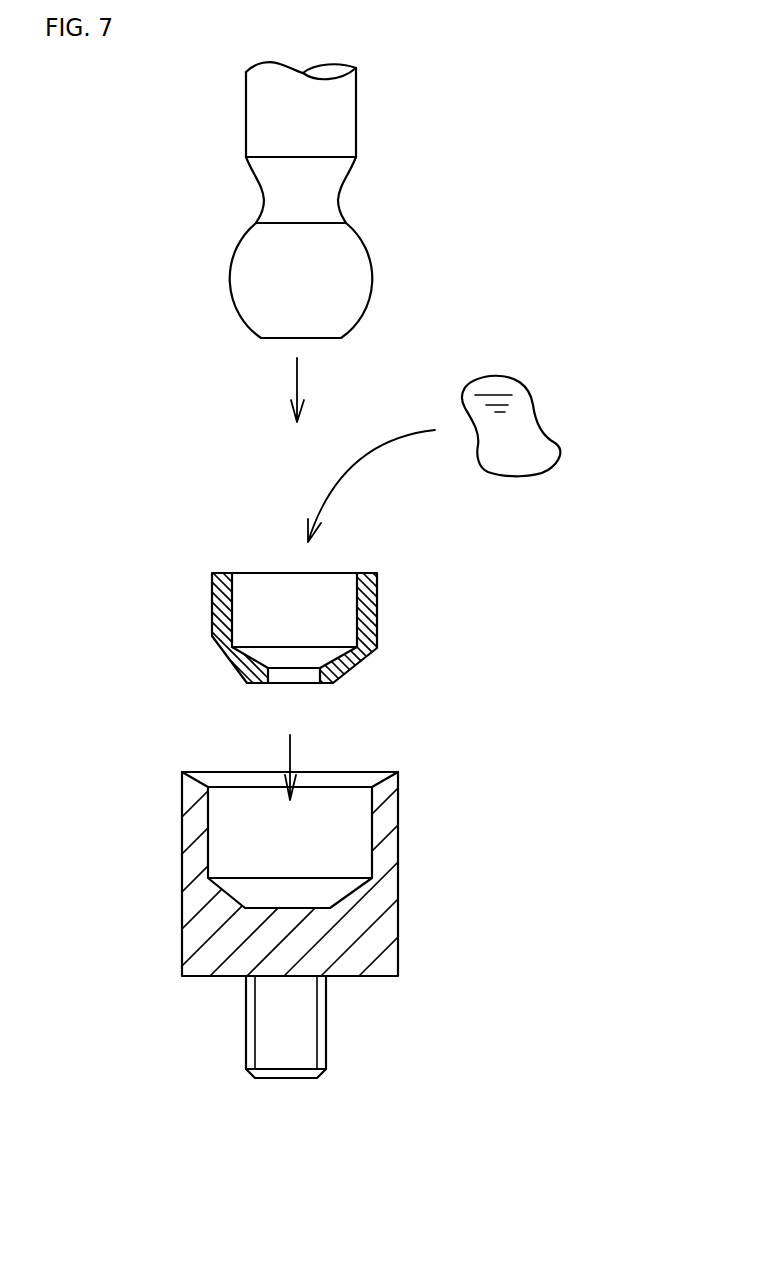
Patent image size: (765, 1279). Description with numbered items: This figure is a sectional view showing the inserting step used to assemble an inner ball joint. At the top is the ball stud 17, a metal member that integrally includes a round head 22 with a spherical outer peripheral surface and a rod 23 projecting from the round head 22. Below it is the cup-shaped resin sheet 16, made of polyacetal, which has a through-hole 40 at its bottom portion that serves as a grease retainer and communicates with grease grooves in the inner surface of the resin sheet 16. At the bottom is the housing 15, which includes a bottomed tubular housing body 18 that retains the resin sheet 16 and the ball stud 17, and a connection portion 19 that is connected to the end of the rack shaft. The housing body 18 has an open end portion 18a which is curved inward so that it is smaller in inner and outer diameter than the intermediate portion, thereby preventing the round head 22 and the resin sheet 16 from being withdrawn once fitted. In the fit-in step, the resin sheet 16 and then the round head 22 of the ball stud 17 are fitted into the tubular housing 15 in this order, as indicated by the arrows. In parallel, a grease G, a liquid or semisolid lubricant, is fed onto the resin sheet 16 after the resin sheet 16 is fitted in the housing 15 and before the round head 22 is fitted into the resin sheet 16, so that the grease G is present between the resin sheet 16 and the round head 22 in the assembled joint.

The rod 23 is at (342, 115).
The ball stud 17 is at (352, 213).
The round head 22 is at (352, 275).
The grease G is at (543, 457).
The resin sheet 16 is at (370, 610).
The through-hole 40 is at (270, 675).
The open end portion 18a is at (388, 790).
The housing body 18 is at (387, 890).
The housing 15 is at (397, 952).
The connection portion 19 is at (282, 1083).